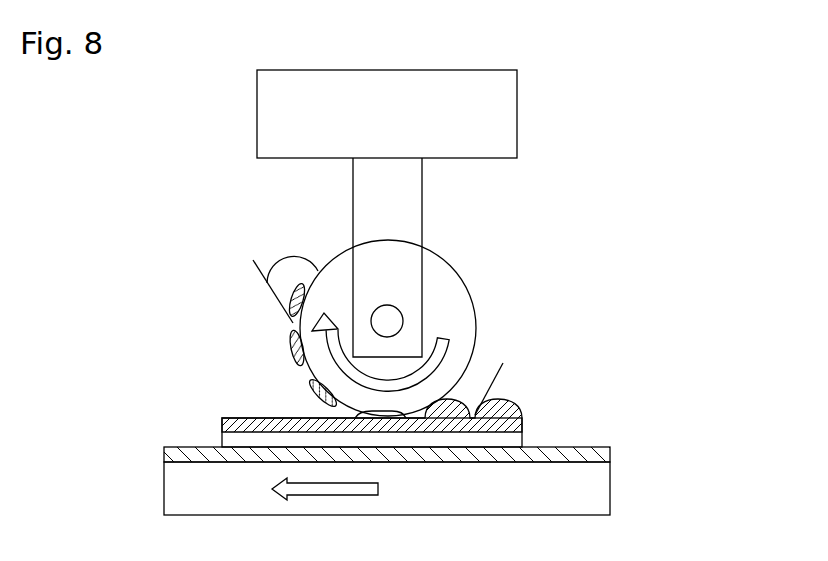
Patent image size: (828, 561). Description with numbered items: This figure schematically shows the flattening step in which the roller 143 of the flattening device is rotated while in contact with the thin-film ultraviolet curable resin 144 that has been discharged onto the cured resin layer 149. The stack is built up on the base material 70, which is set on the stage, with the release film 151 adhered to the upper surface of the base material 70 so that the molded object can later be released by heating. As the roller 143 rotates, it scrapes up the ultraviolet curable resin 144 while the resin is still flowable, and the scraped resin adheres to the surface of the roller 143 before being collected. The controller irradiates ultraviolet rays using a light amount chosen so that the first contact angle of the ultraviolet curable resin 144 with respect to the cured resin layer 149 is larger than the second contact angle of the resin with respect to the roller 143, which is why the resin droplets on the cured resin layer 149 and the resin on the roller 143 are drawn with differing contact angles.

The roller 143 is at (442, 255).
The ultraviolet curable resin 144 is at (222, 420).
The cured resin layer 149 is at (522, 438).
The release film 151 is at (600, 455).
The base material 70 is at (597, 497).